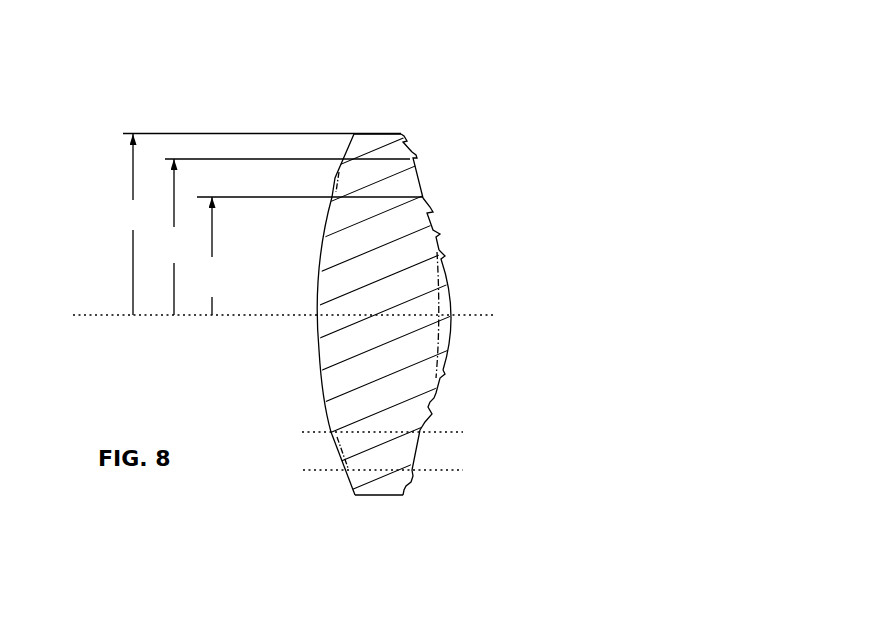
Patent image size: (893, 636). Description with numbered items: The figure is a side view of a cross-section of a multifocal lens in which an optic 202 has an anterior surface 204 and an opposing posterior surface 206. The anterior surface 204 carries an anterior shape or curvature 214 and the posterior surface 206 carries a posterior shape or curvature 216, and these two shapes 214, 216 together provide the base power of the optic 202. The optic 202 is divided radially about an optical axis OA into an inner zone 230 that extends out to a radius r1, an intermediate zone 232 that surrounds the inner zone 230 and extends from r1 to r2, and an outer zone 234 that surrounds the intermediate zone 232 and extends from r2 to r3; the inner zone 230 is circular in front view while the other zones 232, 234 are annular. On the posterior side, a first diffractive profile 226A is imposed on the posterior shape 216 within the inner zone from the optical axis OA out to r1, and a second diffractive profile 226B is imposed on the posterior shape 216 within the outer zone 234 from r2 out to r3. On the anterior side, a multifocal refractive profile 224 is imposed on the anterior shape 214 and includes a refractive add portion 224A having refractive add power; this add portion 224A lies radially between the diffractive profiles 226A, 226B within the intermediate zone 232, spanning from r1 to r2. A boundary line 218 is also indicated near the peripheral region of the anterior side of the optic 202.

The optic 202 is at (397, 105).
The anterior surface 204 is at (307, 247).
The posterior surface 206 is at (460, 400).
The anterior shape 214 is at (318, 255).
The posterior shape 216 is at (447, 283).
The boundary of peripheral portion 218 is at (297, 437).
The multifocal refractive profile 224 is at (283, 383).
The refractive add portion 224A is at (330, 178).
The first diffractive profile 226A is at (447, 382).
The second diffractive profile 226B is at (413, 475).
The inner zone 230 is at (455, 237).
The intermediate zone 232 is at (443, 183).
The outer zone 234 is at (435, 140).
The optical axis OA is at (97, 315).
The radius r1 is at (310, 256).
The radius r2 is at (286, 237).
The radius r3 is at (262, 225).